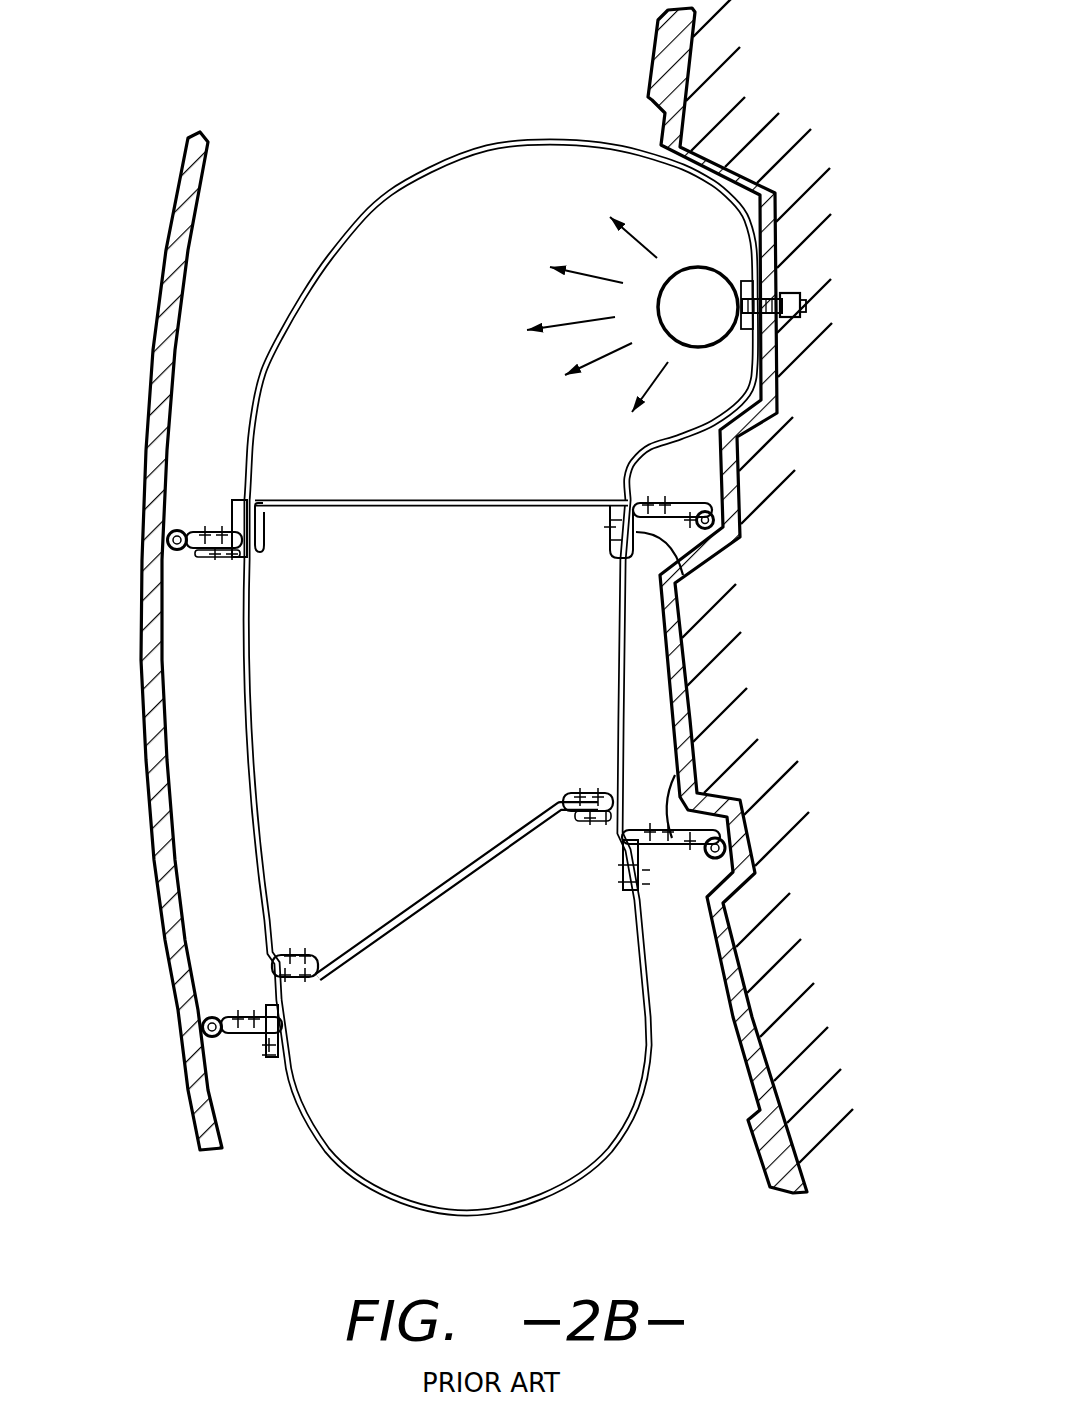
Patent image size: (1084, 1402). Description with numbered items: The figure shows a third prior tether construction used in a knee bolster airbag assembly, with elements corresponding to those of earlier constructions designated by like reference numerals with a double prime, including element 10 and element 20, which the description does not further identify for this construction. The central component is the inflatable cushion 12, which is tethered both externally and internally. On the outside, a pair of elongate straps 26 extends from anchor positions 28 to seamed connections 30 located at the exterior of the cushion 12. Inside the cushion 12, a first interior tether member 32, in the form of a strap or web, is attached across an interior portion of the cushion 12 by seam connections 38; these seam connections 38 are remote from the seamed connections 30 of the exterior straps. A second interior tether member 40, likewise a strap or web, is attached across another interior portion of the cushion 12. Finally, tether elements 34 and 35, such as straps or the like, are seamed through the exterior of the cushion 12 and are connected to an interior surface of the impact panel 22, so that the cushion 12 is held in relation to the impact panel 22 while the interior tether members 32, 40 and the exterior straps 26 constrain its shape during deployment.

The vehicle body structure / mounting wall 10 is at (755, 172).
The cushion 12 is at (477, 143).
The light bulb and mounting bolt 20 is at (777, 370).
The impact panel 22 is at (182, 1025).
The elongate straps 26 is at (683, 500).
The anchor positions 28 is at (713, 537).
The seamed connections 30 is at (713, 587).
The first interior tether member 32 is at (402, 922).
The tether element 34 is at (173, 530).
The tether element 35 is at (207, 1007).
The seam connections 38 is at (592, 793).
The second interior tether member 40 is at (440, 498).